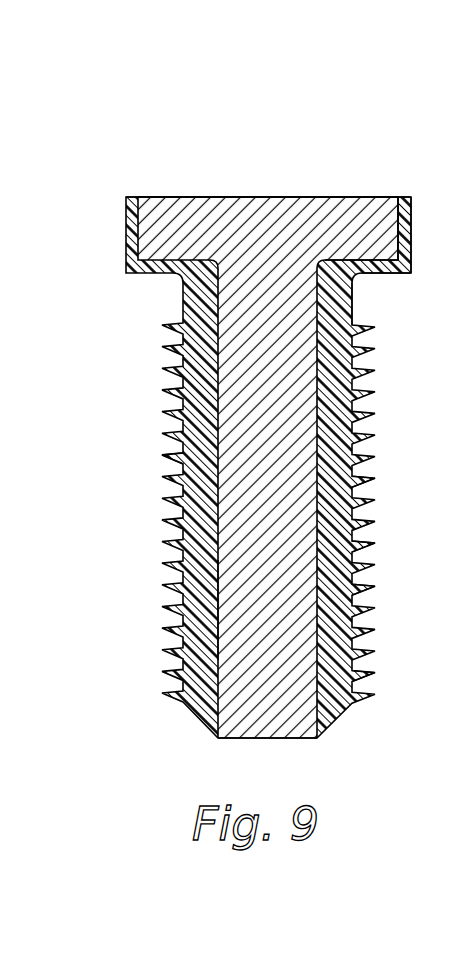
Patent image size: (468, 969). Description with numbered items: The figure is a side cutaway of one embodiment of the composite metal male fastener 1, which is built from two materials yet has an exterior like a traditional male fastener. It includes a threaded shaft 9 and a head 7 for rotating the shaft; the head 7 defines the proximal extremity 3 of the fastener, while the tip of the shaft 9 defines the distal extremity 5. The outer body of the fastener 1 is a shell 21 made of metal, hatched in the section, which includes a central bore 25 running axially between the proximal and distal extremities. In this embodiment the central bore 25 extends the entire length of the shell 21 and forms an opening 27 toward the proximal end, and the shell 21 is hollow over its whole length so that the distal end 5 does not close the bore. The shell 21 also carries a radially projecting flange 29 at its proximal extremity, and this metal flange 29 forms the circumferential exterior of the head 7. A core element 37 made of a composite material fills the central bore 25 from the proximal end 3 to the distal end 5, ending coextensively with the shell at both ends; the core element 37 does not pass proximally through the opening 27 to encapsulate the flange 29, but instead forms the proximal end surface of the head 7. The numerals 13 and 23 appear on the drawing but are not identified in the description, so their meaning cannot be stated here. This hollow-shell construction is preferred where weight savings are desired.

The composite metal male fastener 1 is at (282, 146).
The proximal extremity 3 is at (156, 196).
The opening 27 is at (325, 222).
The head 7 is at (411, 205).
The radially projecting flange 29 is at (404, 262).
The neck region 13 is at (402, 306).
The central bore 25 is at (217, 463).
The threaded shaft 9 is at (353, 474).
The shell 21 is at (353, 538).
The thread flank 23 is at (353, 591).
The core element 37 is at (217, 613).
The distal extremity 5 is at (293, 731).